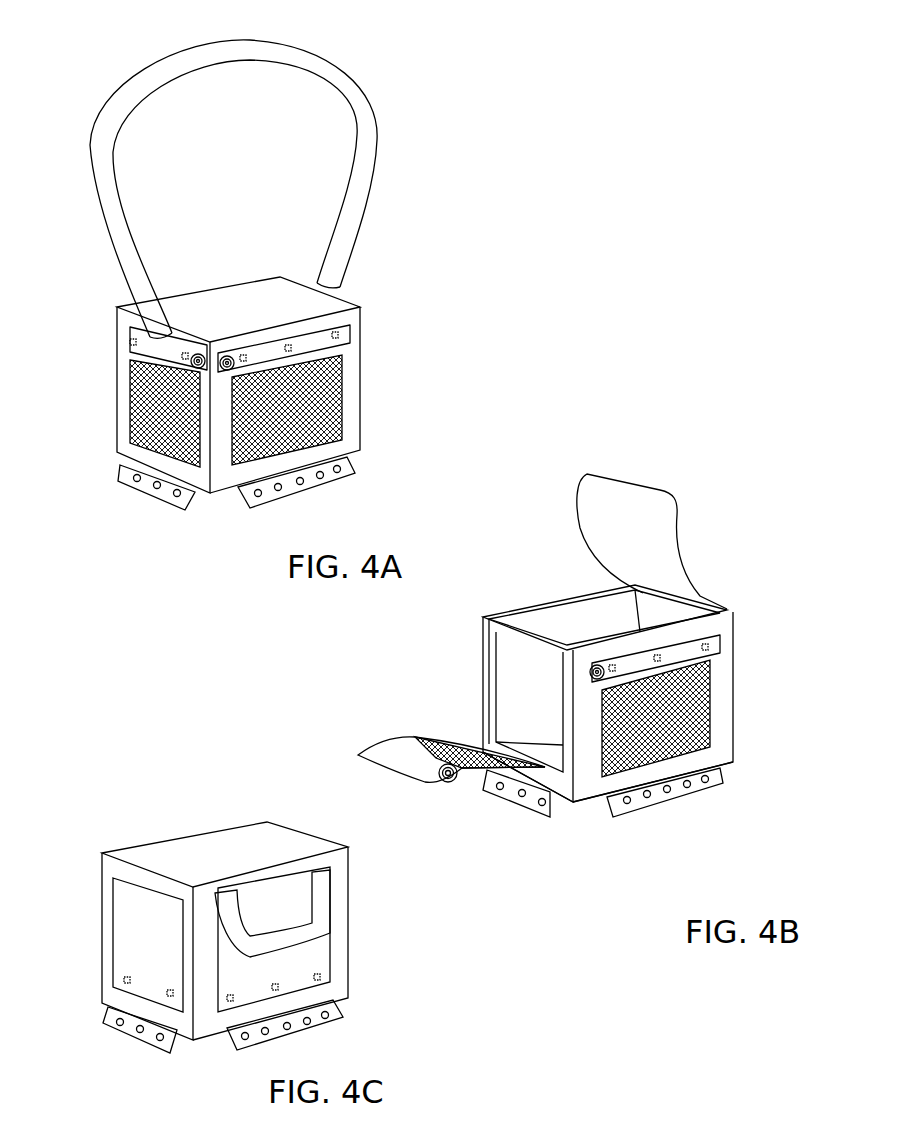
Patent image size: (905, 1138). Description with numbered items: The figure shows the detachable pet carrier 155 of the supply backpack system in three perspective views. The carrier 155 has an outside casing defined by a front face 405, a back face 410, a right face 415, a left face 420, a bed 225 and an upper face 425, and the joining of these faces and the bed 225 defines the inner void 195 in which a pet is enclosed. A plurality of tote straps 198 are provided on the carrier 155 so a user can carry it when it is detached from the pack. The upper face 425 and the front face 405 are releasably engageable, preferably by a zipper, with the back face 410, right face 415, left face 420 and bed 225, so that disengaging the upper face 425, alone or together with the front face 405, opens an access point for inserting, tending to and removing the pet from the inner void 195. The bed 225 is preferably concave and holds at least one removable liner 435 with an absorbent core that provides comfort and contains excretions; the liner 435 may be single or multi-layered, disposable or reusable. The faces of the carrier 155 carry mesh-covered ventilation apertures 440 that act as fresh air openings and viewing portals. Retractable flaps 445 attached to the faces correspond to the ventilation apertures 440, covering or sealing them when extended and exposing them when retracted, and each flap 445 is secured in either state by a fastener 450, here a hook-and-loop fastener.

In FIG. 4A, the tote strap 198 is at (382, 82).
In FIG. 4C, the tote strap 198 is at (332, 910).
In FIG. 4A, the carrier 155 is at (356, 266).
In FIG. 4A, the ventilation aperture 440 is at (350, 383).
In FIG. 4A, the left face 420 is at (370, 428).
In FIG. 4B, the right face 415 is at (582, 583).
In FIG. 4B, the inner void 195 is at (575, 626).
In FIG. 4B, the upper face 425 is at (690, 545).
In FIG. 4B, the back face 410 is at (742, 655).
In FIG. 4B, the front face 405 is at (380, 735).
In FIG. 4B, the removable liner 435 is at (540, 750).
In FIG. 4B, the bed 225 is at (594, 812).
In FIG. 4C, the retractable flap 445 is at (148, 933).
In FIG. 4C, the fastener 450 is at (166, 985).